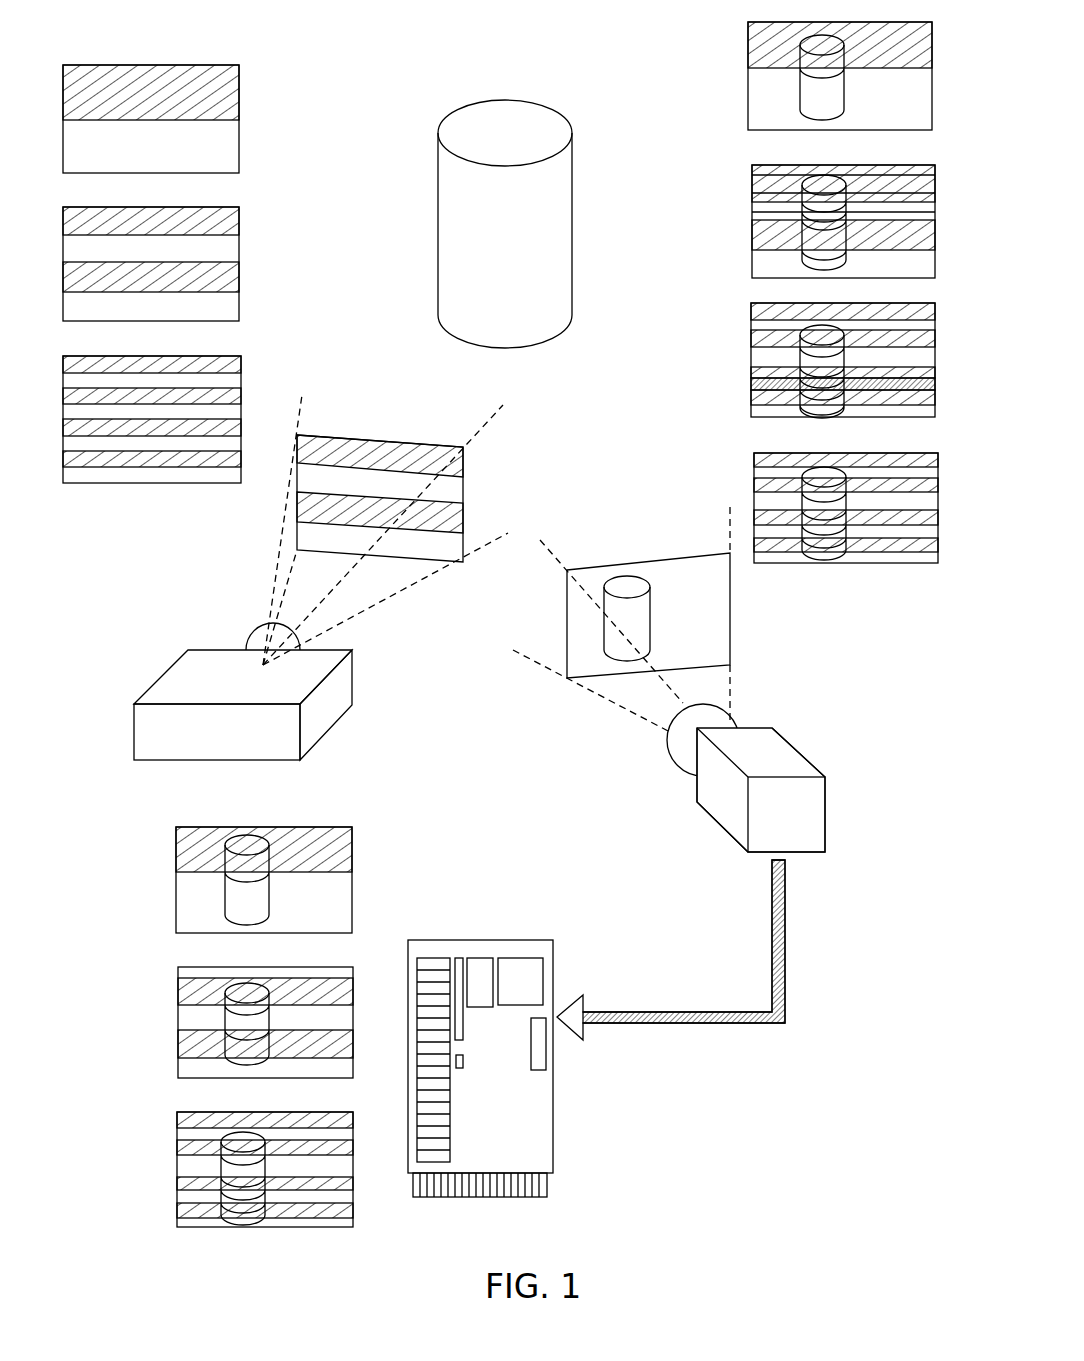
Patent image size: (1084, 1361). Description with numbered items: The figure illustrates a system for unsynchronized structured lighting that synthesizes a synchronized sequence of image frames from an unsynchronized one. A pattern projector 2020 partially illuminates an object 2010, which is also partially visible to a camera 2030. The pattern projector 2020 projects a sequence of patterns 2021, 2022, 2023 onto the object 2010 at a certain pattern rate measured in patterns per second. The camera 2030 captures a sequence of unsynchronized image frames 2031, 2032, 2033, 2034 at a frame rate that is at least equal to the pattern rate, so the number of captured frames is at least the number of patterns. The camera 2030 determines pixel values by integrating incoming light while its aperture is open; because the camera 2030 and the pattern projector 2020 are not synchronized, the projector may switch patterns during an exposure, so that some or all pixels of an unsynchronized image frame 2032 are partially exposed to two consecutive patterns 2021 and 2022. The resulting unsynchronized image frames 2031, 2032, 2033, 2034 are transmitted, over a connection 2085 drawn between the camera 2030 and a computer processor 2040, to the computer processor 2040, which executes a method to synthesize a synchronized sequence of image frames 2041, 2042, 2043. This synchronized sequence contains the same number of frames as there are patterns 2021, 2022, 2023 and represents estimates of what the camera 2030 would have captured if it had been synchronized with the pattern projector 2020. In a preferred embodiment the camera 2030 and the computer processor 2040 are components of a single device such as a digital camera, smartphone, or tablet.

The object 2010 is at (488, 100).
The pattern projector 2020 is at (172, 690).
The first pattern 2021 is at (223, 143).
The second pattern 2022 is at (223, 260).
The third pattern 2023 is at (223, 380).
The camera 2030 is at (793, 822).
The first unsynchronized image frame 2031 is at (767, 98).
The second unsynchronized image frame 2032 is at (768, 217).
The third unsynchronized image frame 2033 is at (770, 330).
The fourth unsynchronized image frame 2034 is at (772, 473).
The computer processor 2040 is at (535, 1130).
The first synchronized image frame 2041 is at (193, 903).
The second synchronized image frame 2042 is at (193, 1022).
The third synchronized image frame 2043 is at (192, 1135).
The data cable 2085 is at (780, 942).